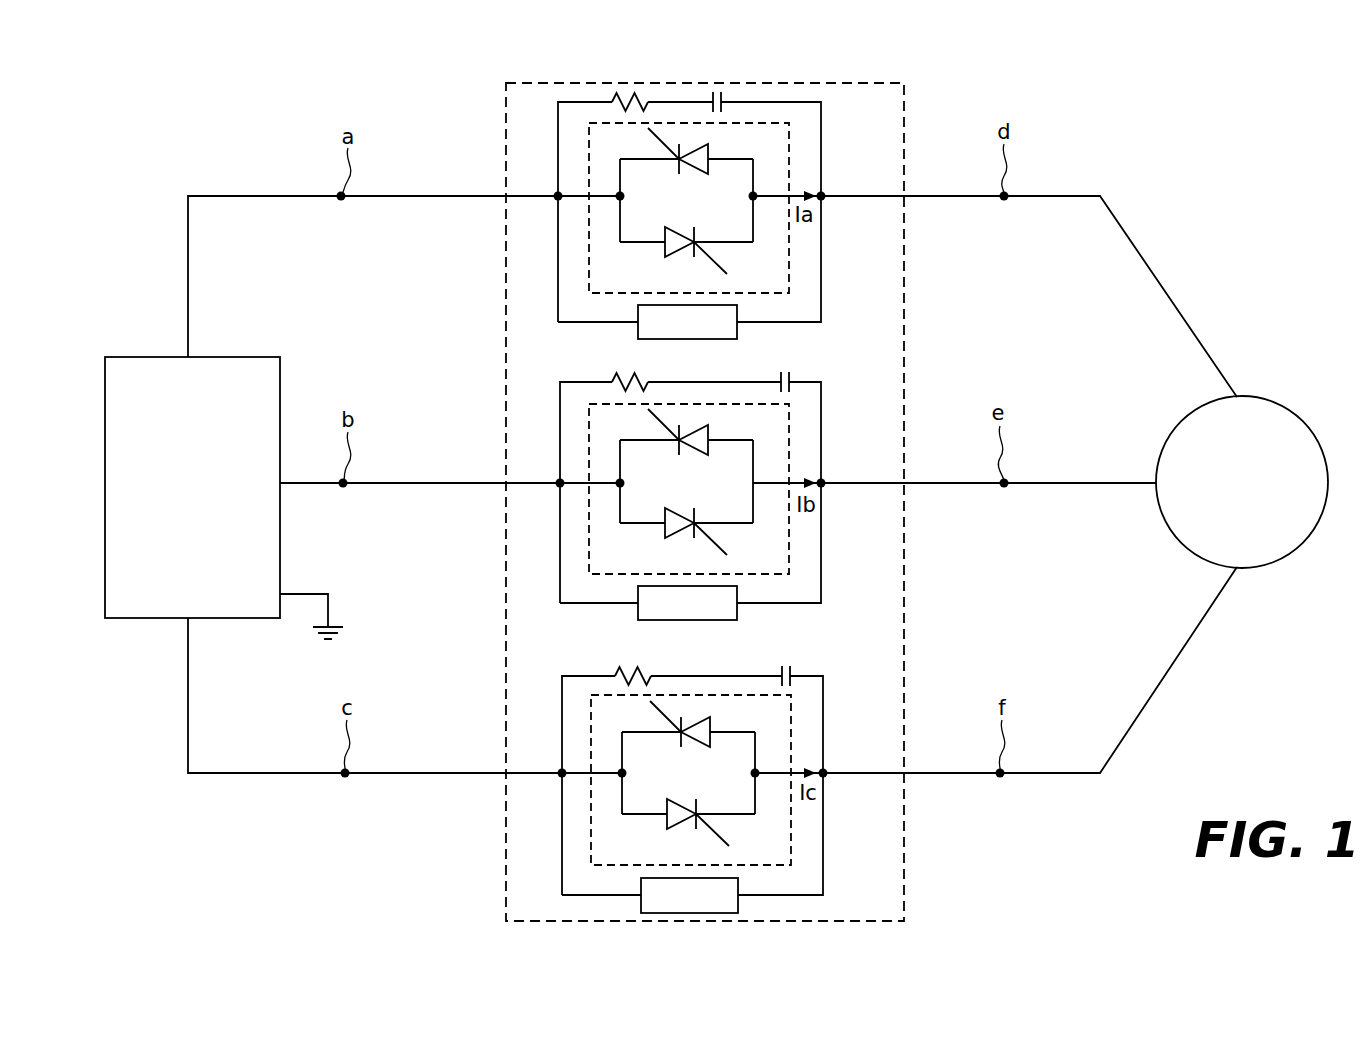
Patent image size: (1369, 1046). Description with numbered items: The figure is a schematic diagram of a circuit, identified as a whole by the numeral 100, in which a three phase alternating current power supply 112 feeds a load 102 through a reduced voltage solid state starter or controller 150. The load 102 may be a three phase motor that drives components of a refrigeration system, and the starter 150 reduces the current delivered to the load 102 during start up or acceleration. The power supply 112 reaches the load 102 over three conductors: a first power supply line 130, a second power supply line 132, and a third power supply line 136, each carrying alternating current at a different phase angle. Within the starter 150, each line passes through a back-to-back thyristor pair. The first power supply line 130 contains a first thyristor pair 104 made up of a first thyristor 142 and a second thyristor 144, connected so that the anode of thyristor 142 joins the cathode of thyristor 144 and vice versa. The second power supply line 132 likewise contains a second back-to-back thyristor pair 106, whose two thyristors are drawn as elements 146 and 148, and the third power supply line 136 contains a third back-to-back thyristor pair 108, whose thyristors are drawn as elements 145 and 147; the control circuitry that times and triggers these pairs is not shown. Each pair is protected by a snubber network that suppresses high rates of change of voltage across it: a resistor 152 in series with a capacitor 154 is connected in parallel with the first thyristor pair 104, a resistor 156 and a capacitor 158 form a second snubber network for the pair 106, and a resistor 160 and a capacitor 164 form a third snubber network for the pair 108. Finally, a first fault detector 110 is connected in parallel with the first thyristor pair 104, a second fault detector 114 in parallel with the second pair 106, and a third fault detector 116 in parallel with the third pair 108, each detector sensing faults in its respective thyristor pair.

The power control system 100 is at (1153, 142).
The load 102 is at (1300, 417).
The first thyristor pair 104 is at (729, 208).
The second back-to-back thyristor pair 106 is at (729, 489).
The third back-to-back thyristor pair 108 is at (736, 780).
The first fault detector 110 is at (676, 339).
The three phase alternating current power supply 112 is at (280, 548).
The second fault detector 114 is at (685, 620).
The third fault detector 116 is at (738, 905).
The first power supply line 130 is at (188, 286).
The second power supply line 132 is at (445, 483).
The third power supply line 136 is at (188, 714).
The first thyristor 142 is at (708, 148).
The second thyristor 144 is at (665, 248).
The thyristor 145 is at (710, 725).
The thyristor 146 is at (708, 431).
The thyristor 147 is at (667, 823).
The thyristor 148 is at (665, 530).
The reduced voltage solid state starter or controller 150 is at (906, 880).
The resistor 152 is at (617, 92).
The capacitor 154 is at (725, 90).
The resistor 156 is at (612, 372).
The capacitor 158 is at (790, 372).
The resistor 160 is at (615, 666).
The capacitor 164 is at (790, 665).